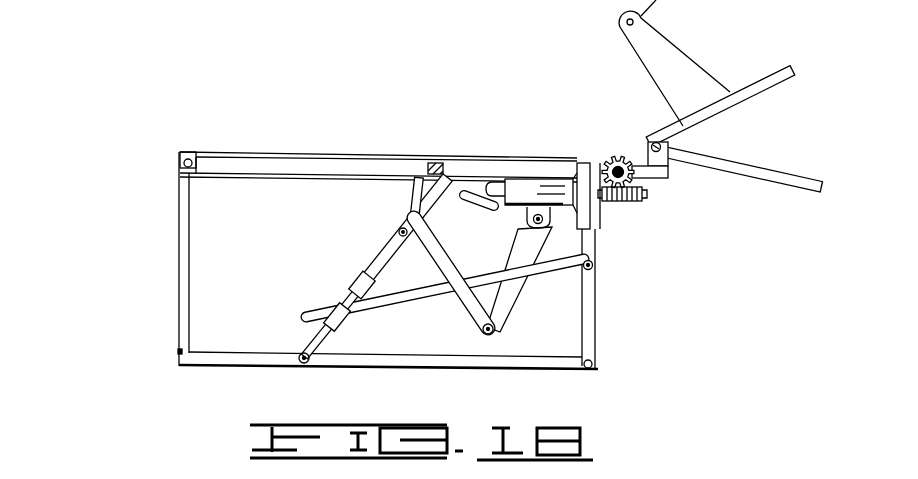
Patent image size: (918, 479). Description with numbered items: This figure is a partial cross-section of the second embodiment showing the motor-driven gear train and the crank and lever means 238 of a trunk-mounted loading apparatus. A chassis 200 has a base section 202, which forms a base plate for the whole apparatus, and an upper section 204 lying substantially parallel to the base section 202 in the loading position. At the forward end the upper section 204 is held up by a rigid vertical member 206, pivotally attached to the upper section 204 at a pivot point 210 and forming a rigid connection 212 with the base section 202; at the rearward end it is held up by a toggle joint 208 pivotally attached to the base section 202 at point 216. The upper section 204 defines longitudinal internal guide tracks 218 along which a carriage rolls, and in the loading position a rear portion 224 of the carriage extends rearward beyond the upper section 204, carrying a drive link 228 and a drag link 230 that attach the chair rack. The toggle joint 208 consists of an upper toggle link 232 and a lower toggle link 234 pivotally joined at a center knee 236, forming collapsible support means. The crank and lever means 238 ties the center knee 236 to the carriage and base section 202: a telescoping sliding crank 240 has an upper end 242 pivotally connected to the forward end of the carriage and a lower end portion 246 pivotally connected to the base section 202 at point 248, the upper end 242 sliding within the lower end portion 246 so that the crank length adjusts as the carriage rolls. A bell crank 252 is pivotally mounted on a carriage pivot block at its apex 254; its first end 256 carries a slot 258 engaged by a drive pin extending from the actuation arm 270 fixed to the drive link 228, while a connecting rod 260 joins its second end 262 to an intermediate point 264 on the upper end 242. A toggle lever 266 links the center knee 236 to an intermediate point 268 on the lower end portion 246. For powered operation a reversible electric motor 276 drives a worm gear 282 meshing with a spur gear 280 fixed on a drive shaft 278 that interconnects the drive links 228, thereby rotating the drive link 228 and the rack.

The chassis 200 is at (170, 192).
The base section 202 is at (243, 355).
The upper section 204 is at (325, 163).
The rigid vertical member 206 is at (180, 300).
The toggle joint 208 is at (656, 283).
The pivot point 210 is at (191, 151).
The rigid connection 212 is at (177, 366).
The pivot point 216 is at (595, 371).
The guide track 218 is at (267, 163).
The rear portion of carriage 224 is at (712, 114).
The drive link 228 is at (763, 83).
The drag link 230 is at (793, 177).
The upper toggle link 232 is at (594, 247).
The lower toggle link 234 is at (591, 329).
The center knee 236 is at (593, 268).
The crank and lever means 238 is at (318, 265).
The sliding crank 240 is at (356, 279).
The upper end of sliding crank 242 is at (426, 166).
The lower end portion of sliding crank 246 is at (312, 344).
The pivot point 248 is at (307, 365).
The bell crank 252 is at (502, 305).
The apex 254 is at (592, 243).
The first end of bell crank 256 is at (479, 207).
The slot 258 is at (488, 172).
The connecting rod 260 is at (465, 305).
The second end of bell crank 262 is at (489, 339).
The intermediate point 264 is at (402, 228).
The toggle lever 266 is at (413, 302).
The intermediate point 268 is at (328, 306).
The actuation arm 270 is at (666, 48).
The reversible electric motor 276 is at (534, 183).
The drive shaft 278 is at (613, 157).
The spur gear 280 is at (634, 146).
The worm gear 282 is at (630, 203).